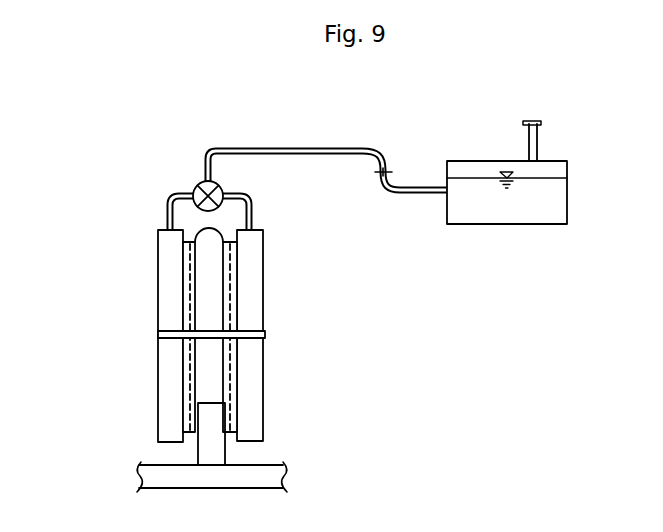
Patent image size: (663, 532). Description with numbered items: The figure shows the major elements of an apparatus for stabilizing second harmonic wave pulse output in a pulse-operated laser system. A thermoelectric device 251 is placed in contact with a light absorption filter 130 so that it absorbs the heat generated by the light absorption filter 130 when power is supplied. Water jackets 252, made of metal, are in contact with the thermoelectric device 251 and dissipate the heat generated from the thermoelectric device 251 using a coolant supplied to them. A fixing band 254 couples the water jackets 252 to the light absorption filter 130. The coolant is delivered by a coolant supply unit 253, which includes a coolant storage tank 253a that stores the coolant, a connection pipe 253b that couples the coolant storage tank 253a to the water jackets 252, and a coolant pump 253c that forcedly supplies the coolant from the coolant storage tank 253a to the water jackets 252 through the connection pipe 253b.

The light absorption filter 130 is at (208, 395).
The thermoelectric device 251 is at (234, 242).
The water jackets 252 is at (252, 383).
The coolant supply unit 253 is at (403, 235).
The coolant storage tank 253a is at (448, 208).
The connection pipe 253b is at (230, 193).
The coolant pump 253c is at (223, 186).
The fixing band 254 is at (265, 337).